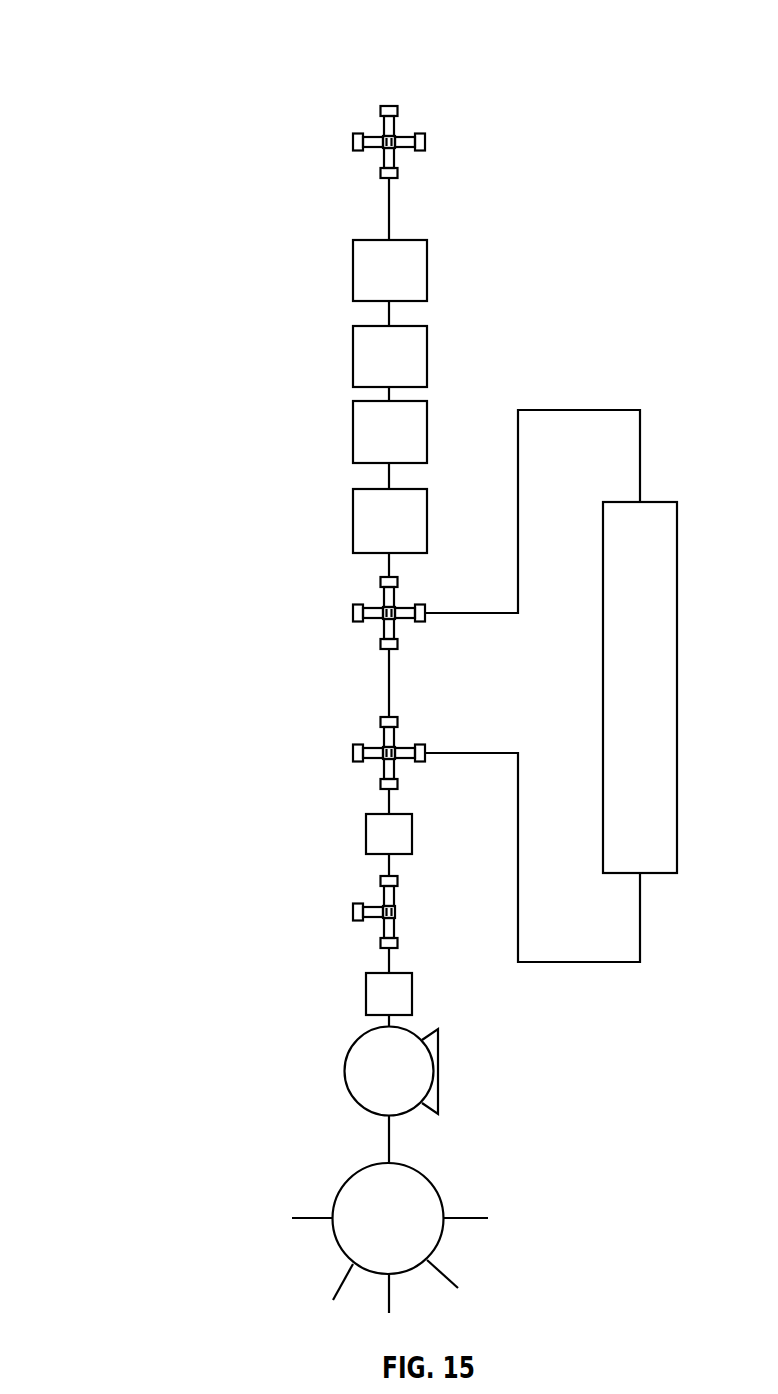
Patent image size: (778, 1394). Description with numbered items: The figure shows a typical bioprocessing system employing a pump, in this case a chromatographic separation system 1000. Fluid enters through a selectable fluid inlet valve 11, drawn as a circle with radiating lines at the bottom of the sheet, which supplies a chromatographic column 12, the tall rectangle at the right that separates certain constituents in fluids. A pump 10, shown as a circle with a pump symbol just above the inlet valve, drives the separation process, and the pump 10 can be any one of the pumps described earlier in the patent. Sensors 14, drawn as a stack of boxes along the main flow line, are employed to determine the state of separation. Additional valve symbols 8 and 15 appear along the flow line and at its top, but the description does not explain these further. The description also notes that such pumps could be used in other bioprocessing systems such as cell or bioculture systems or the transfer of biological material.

The chromatographic separation system 1000 is at (146, 38).
The valve 15 is at (353, 142).
The sensors 14 is at (363, 435).
The chromatographic column 12 is at (620, 681).
The valve 8 is at (353, 752).
The pump 10 is at (361, 1070).
The selectable fluid inlet valve 11 is at (357, 1200).